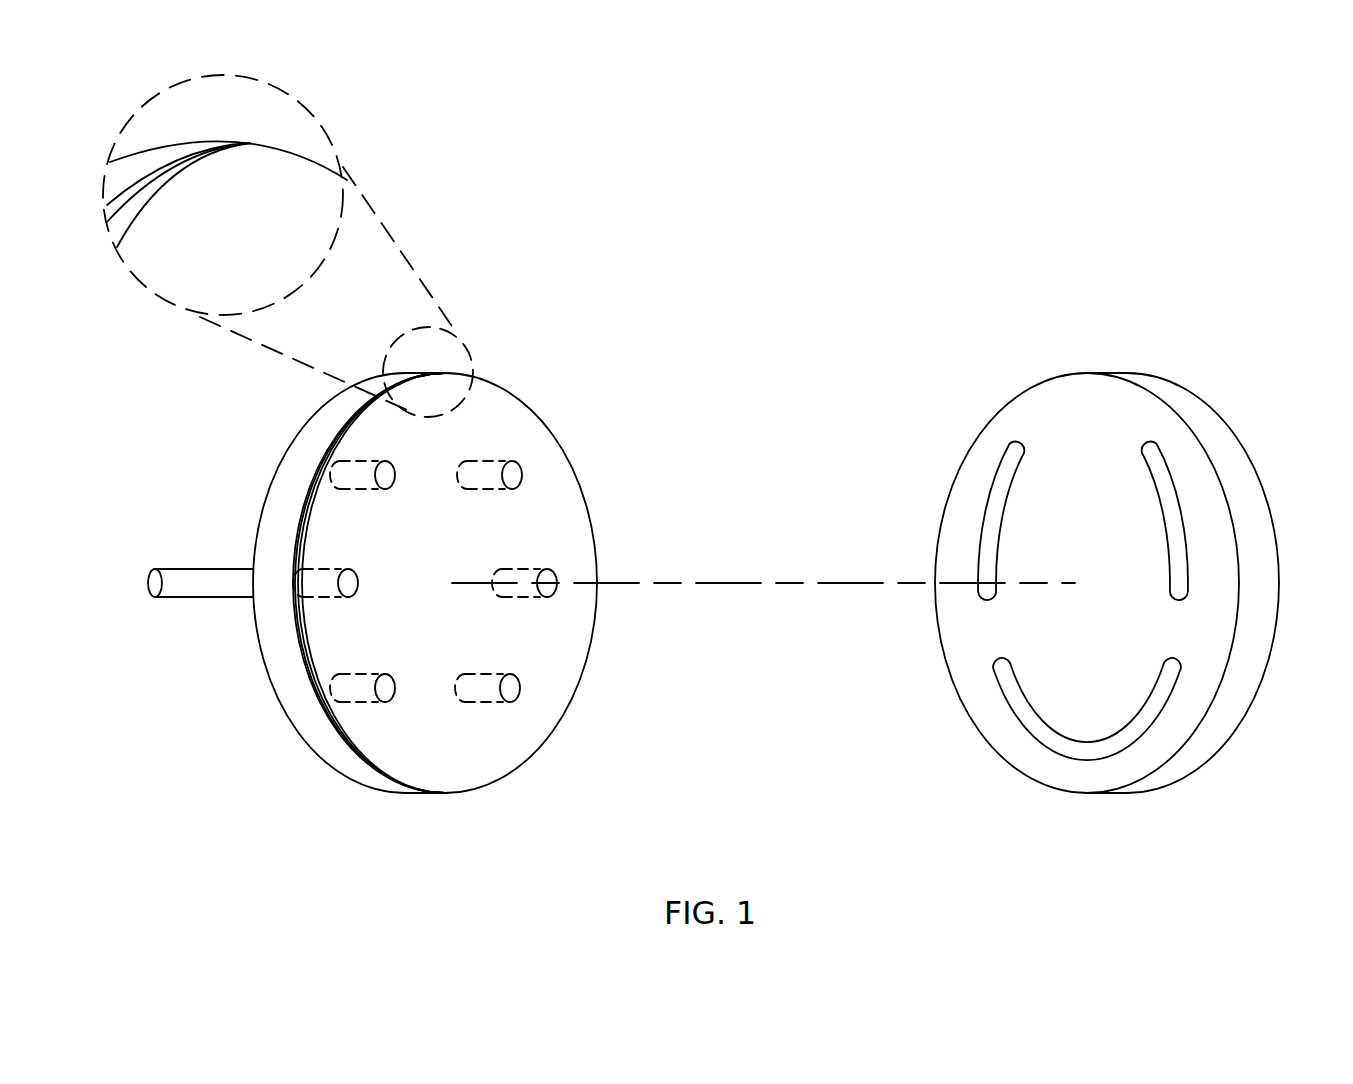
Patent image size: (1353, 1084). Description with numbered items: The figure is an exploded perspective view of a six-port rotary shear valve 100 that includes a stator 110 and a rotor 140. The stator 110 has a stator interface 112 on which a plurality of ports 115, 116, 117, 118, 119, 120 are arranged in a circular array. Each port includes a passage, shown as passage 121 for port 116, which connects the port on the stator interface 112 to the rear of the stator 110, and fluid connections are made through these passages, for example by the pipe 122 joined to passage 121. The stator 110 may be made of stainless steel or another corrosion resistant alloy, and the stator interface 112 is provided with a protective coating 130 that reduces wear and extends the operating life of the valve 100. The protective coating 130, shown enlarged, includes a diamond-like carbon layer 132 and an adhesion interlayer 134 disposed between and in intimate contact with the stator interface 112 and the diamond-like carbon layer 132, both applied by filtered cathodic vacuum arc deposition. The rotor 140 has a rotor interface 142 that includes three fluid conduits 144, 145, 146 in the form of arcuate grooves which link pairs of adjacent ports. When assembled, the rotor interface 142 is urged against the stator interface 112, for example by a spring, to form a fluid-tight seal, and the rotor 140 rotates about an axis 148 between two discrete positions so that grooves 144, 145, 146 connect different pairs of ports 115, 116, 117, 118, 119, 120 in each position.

The six-port rotary shear valve 100 is at (897, 231).
The stator 110 is at (277, 668).
The stator interface 112 is at (559, 521).
The port 115 is at (388, 473).
The port 116 is at (352, 582).
The port 117 is at (388, 692).
The port 118 is at (515, 692).
The port 119 is at (550, 581).
The port 120 is at (515, 473).
The passage 121 is at (320, 568).
The pipe 122 is at (148, 582).
The protective coating 130 is at (278, 138).
The diamond-like carbon layer 132 is at (207, 157).
The adhesion interlayer 134 is at (163, 167).
The rotor 140 is at (1208, 427).
The rotor interface 142 is at (1032, 441).
The fluid conduit 144 is at (1178, 535).
The fluid conduit 145 is at (1053, 743).
The fluid conduit 146 is at (1002, 487).
The axis 148 is at (738, 583).